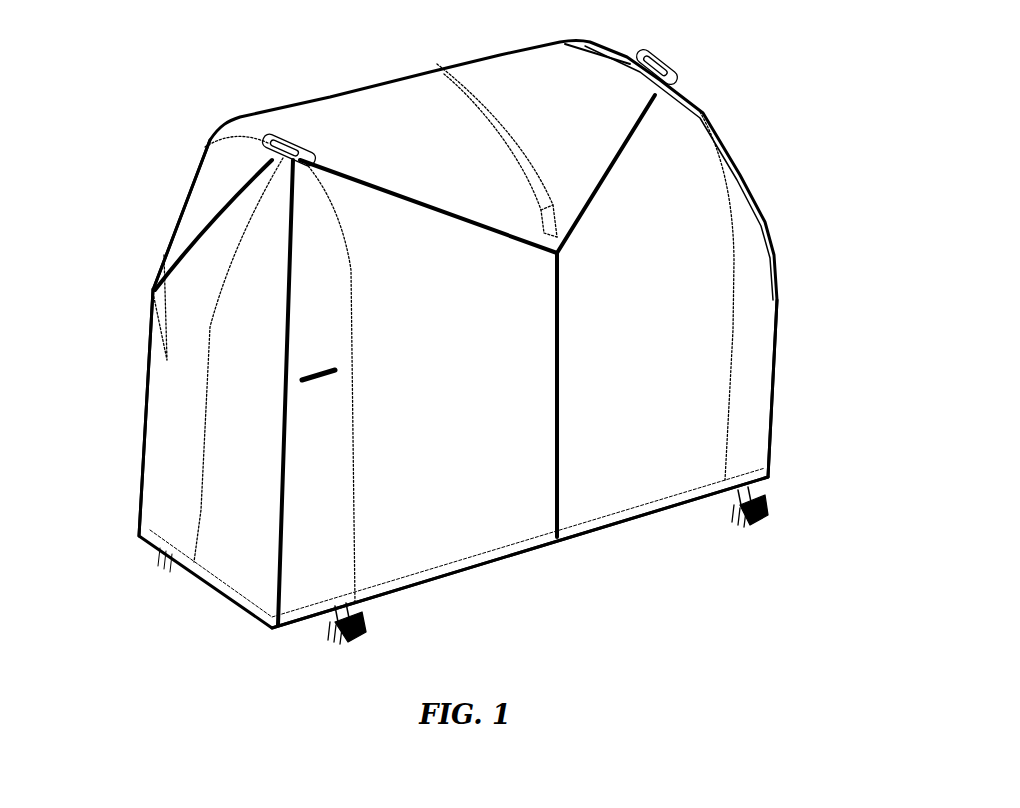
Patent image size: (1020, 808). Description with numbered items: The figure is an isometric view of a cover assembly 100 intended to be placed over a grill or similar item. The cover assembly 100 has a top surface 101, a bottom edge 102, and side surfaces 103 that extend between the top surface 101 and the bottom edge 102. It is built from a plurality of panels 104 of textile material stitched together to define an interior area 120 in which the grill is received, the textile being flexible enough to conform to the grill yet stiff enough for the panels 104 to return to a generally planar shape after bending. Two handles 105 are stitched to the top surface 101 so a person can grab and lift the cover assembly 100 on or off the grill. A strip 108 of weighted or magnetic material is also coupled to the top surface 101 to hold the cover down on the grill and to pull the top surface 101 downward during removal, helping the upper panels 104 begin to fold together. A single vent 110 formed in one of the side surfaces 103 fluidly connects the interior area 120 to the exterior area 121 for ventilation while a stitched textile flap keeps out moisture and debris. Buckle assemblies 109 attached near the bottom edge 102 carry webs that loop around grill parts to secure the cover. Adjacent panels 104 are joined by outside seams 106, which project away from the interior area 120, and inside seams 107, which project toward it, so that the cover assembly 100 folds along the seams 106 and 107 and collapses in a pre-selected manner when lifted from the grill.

The cover assembly 100 is at (776, 168).
The top surface 101 is at (395, 102).
The bottom edge 102 is at (573, 539).
The side surfaces 103 is at (172, 420).
The panels 104 is at (252, 131).
The handles 105 is at (283, 140).
The outside seams 106 is at (193, 230).
The inside seams 107 is at (492, 99).
The strip 108 is at (527, 143).
The buckle assemblies 109 is at (372, 632).
The vent 110 is at (164, 340).
The interior area 120 is at (446, 592).
The exterior area 121 is at (747, 623).